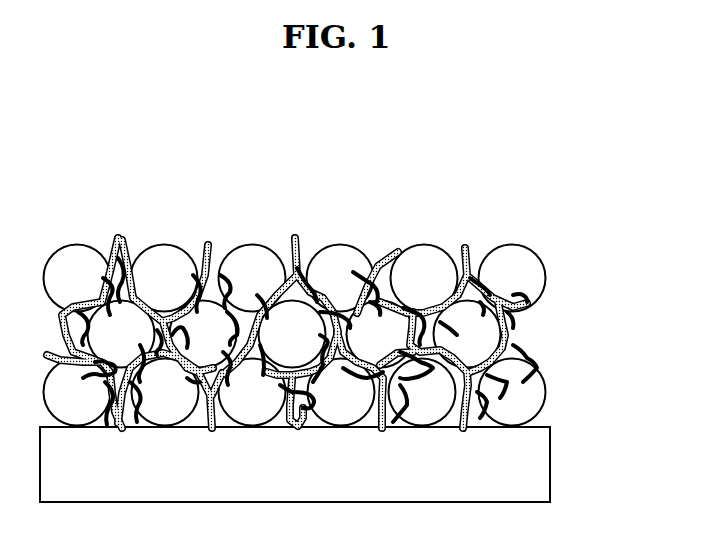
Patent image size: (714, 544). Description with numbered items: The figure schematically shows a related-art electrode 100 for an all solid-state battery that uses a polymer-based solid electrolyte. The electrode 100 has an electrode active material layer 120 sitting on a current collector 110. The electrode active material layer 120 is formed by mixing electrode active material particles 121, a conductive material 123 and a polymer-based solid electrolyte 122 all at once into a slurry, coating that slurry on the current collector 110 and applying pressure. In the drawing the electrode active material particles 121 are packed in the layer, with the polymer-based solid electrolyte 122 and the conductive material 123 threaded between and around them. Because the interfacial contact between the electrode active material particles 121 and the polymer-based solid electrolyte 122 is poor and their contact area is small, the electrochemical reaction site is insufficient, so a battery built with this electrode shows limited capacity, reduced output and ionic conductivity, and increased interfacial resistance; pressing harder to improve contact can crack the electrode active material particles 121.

The electrode 100 is at (150, 135).
The current collector 110 is at (548, 461).
The electrode active material layer 120 is at (567, 245).
The electrode active material particles 121 is at (75, 248).
The polymer-based solid electrolyte 122 is at (197, 247).
The conductive material 123 is at (355, 272).